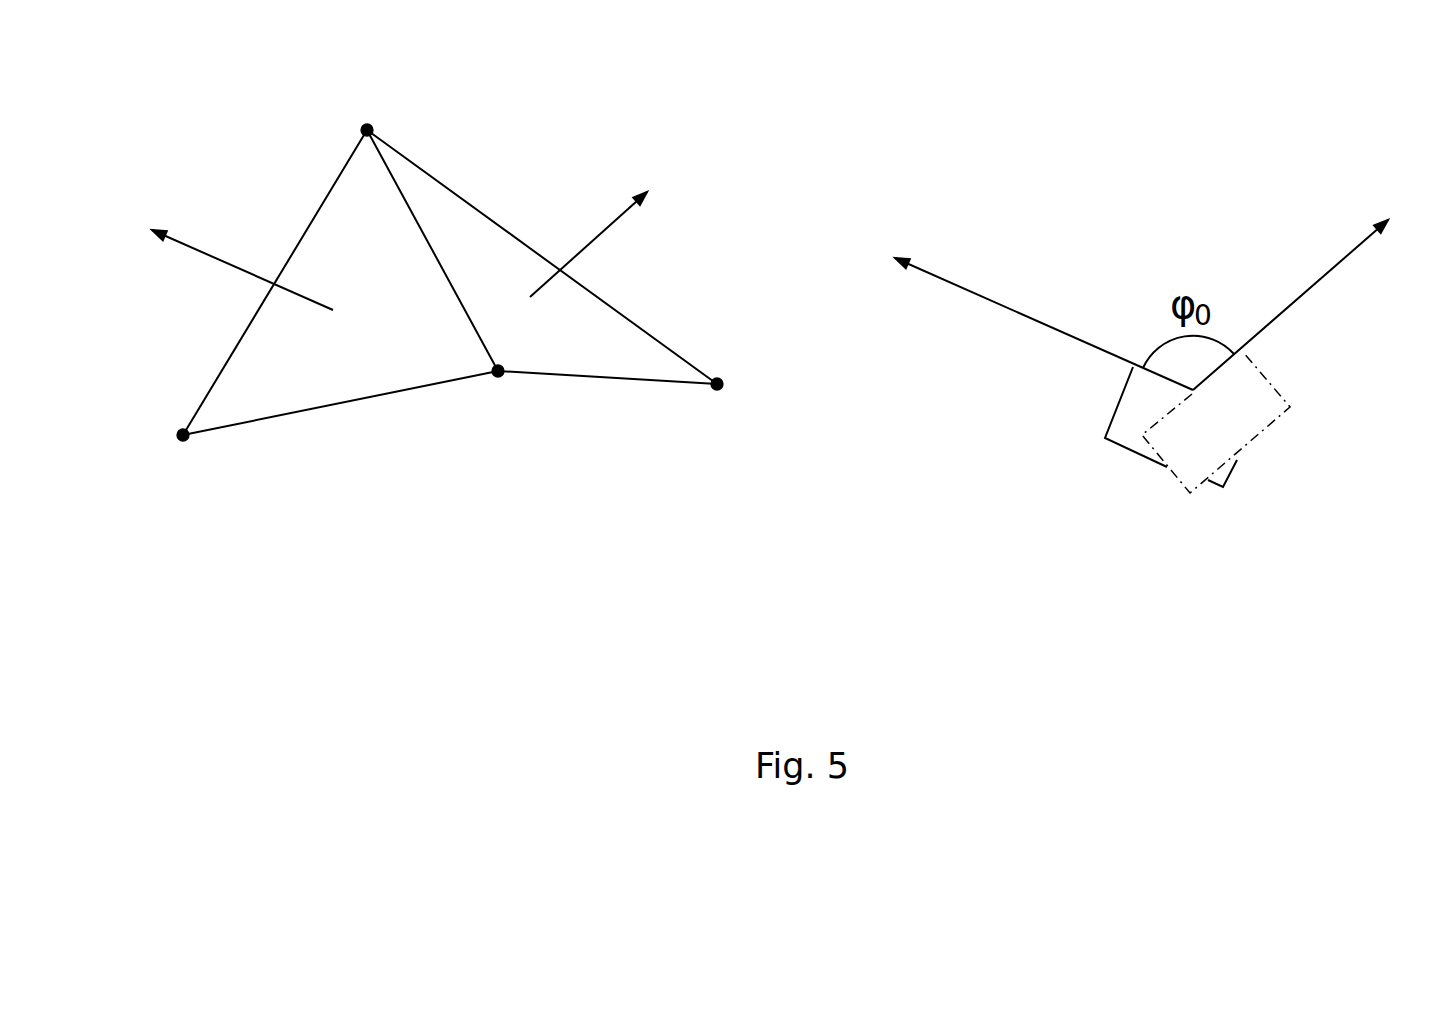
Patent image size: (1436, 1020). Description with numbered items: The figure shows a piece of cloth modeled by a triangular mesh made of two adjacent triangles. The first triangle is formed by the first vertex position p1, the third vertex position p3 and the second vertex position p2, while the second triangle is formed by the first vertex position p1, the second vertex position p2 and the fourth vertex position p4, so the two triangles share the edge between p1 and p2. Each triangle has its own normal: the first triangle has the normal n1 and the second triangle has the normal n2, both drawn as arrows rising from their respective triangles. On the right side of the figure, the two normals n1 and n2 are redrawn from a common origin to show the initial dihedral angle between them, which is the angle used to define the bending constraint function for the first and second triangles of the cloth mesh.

The first vertex position p1 is at (512, 395).
The second vertex position p2 is at (371, 103).
The third vertex position p3 is at (164, 451).
The fourth vertex position p4 is at (745, 363).
The normal of first triangle n1 is at (647, 281).
The normal of second triangle n2 is at (981, 270).